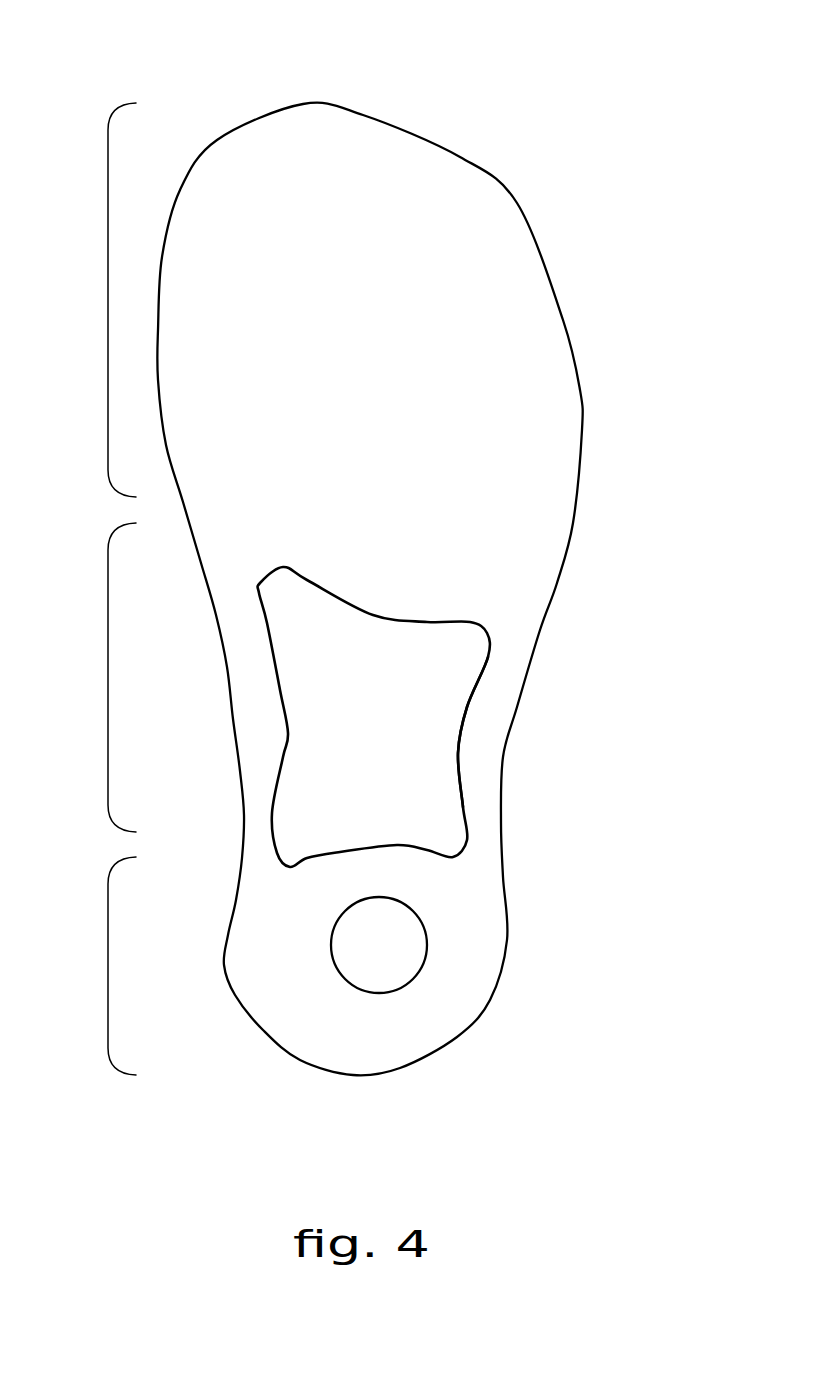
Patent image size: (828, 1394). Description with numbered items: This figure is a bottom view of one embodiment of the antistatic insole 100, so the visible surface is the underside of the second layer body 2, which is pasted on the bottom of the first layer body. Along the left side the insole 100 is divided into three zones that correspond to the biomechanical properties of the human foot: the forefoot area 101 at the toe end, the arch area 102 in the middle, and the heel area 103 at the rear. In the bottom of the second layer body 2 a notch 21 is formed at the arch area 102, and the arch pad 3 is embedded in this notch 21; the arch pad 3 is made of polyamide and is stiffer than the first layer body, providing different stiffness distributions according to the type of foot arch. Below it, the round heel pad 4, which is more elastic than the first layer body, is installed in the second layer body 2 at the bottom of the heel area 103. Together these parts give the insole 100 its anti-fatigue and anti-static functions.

The antistatic insole 100 is at (132, 25).
The forefoot area 101 is at (108, 294).
The arch area 102 is at (108, 669).
The heel area 103 is at (108, 961).
The second layer body 2 is at (465, 357).
The arch pad 3 is at (430, 643).
The notch 21 is at (470, 747).
The heel pad 4 is at (417, 957).